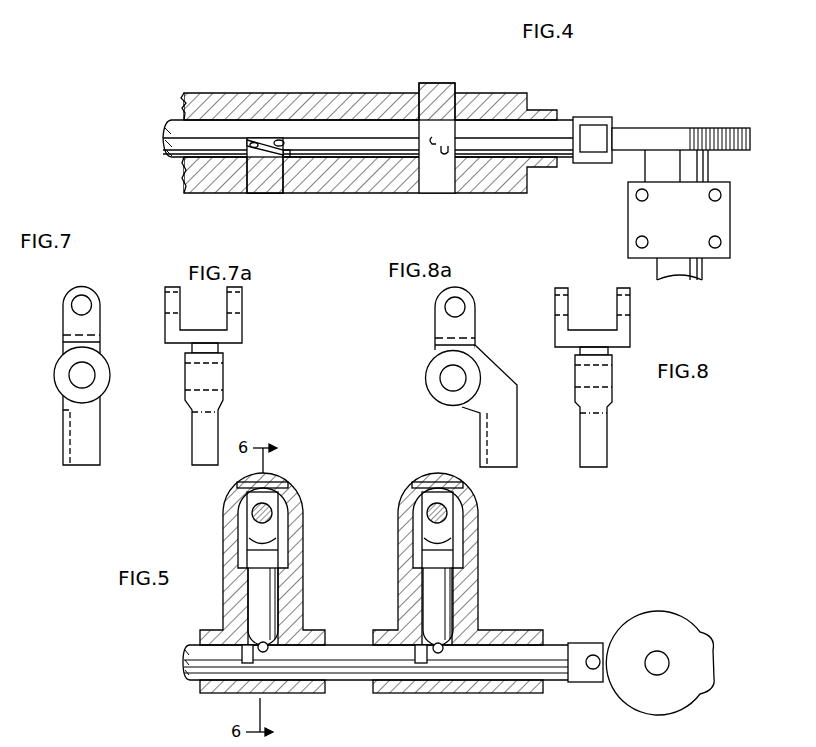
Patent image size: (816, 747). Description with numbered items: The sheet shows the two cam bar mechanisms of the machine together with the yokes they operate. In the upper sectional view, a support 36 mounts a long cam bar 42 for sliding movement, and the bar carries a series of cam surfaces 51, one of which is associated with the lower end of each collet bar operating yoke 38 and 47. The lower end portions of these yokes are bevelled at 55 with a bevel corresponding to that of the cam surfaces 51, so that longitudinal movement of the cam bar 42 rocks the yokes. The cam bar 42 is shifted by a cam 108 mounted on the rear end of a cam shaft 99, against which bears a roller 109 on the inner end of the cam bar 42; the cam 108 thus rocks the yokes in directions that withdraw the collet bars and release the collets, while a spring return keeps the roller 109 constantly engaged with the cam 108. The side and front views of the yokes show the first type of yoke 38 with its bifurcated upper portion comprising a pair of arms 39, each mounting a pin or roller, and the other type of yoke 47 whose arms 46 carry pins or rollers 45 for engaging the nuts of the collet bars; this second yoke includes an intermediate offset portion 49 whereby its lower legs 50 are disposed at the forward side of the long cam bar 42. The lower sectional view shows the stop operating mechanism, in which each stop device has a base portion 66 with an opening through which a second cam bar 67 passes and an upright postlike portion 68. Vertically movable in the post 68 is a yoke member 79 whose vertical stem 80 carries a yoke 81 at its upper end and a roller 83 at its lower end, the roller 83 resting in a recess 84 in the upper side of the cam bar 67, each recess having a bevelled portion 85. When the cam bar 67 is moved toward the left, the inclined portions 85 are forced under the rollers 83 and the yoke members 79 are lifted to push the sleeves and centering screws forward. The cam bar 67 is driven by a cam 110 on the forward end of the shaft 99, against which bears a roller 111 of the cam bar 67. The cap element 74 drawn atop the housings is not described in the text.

In FIG. 4, the support 36 is at (225, 93).
In FIG. 4, the cam bar 42 is at (172, 157).
In FIG. 4, the cam surfaces 51 is at (254, 147).
In FIG. 4, the bevel 55 is at (270, 186).
In FIG. 7, the bevel 55 is at (67, 438).
In FIG. 8a, the bevel 55 is at (482, 437).
In FIG. 4, the collet bar operating yoke 38 is at (285, 158).
In FIG. 7, the collet bar operating yoke 38 is at (90, 428).
In FIG. 7a, the collet bar operating yoke 38 is at (205, 432).
In FIG. 4, the collet bar operating yoke 47 is at (438, 175).
In FIG. 8a, the collet bar operating yoke 47 is at (504, 421).
In FIG. 8, the collet bar operating yoke 47 is at (620, 351).
In FIG. 4, the roller 109 is at (592, 135).
In FIG. 4, the cam 108 is at (653, 135).
In FIG. 7, the arms 39 is at (73, 290).
In FIG. 7a, the arms 39 is at (180, 290).
In FIG. 8a, the arms 46 is at (457, 288).
In FIG. 8, the arms 46 is at (564, 289).
In FIG. 8a, the pins or rollers 45 is at (458, 307).
In FIG. 8a, the intermediate offset portion 49 is at (490, 388).
In FIG. 8a, the legs 50 is at (505, 447).
In FIG. 8, the legs 50 is at (597, 438).
In FIG. 5, the base portion 66 is at (303, 685).
In FIG. 5, the upright portion 68 is at (293, 583).
In FIG. 5, the yoke member 79 is at (232, 595).
In FIG. 5, the cap 74 is at (417, 503).
In FIG. 5, the yoke 81 is at (283, 532).
In FIG. 5, the stem 80 is at (258, 602).
In FIG. 5, the bevelled portions 85 is at (278, 650).
In FIG. 5, the recesses 84 is at (250, 657).
In FIG. 5, the roller 83 is at (270, 652).
In FIG. 5, the cam bar 67 is at (350, 652).
In FIG. 5, the roller 111 is at (608, 657).
In FIG. 5, the cam shaft 99 is at (655, 663).
In FIG. 5, the cam 110 is at (655, 627).